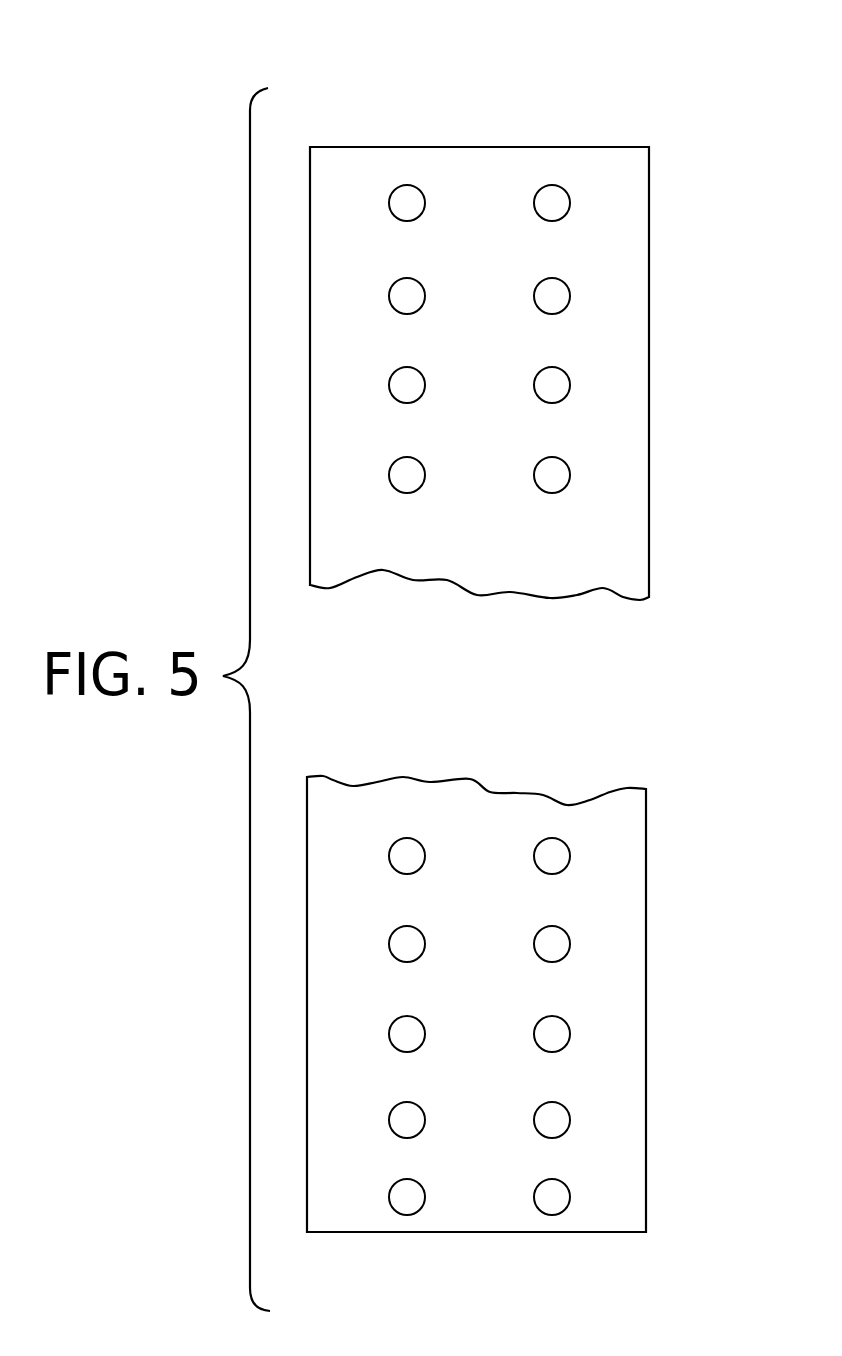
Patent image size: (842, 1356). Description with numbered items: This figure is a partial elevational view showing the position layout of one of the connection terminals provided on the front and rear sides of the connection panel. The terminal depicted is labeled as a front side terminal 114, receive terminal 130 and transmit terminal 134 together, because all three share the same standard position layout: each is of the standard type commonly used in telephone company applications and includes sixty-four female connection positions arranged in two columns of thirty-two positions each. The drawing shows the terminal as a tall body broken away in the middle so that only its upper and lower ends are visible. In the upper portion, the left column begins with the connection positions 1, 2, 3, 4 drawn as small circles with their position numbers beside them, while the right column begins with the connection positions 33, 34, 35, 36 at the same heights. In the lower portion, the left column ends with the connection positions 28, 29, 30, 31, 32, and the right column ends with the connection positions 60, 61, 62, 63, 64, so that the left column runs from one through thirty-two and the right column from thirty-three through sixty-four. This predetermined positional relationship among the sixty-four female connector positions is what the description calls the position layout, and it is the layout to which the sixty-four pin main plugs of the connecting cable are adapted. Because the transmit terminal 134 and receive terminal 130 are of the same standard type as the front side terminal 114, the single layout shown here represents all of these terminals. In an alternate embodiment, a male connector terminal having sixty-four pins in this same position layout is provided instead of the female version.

The front side terminal 114 is at (547, 105).
The receive terminal 130 is at (547, 105).
The transmit terminal 134 is at (547, 105).
The pin 1 is at (382, 204).
The pin 2 is at (382, 297).
The pin 3 is at (382, 386).
The pin 4 is at (382, 476).
The pin 28 is at (385, 856).
The pin 29 is at (385, 945).
The pin 30 is at (385, 1035).
The pin 31 is at (385, 1121).
The pin 32 is at (385, 1199).
The pin 33 is at (574, 201).
The pin 34 is at (574, 294).
The pin 35 is at (574, 383).
The pin 36 is at (574, 475).
The pin 60 is at (573, 856).
The pin 61 is at (573, 944).
The pin 62 is at (573, 1034).
The pin 63 is at (573, 1120).
The pin 64 is at (573, 1198).